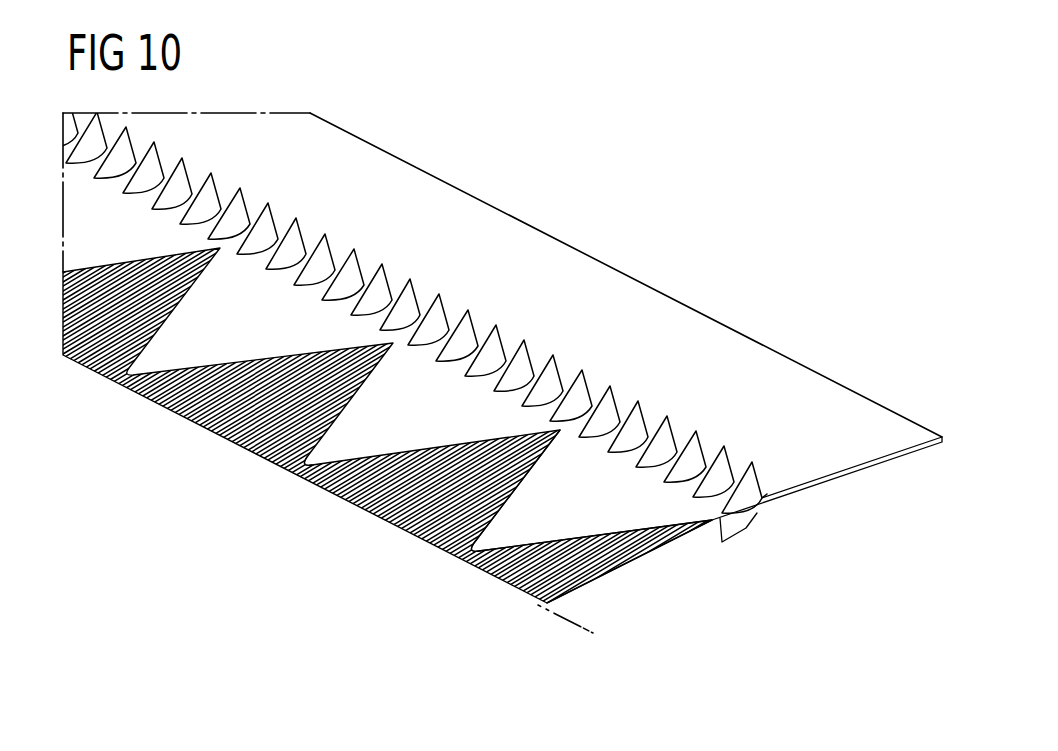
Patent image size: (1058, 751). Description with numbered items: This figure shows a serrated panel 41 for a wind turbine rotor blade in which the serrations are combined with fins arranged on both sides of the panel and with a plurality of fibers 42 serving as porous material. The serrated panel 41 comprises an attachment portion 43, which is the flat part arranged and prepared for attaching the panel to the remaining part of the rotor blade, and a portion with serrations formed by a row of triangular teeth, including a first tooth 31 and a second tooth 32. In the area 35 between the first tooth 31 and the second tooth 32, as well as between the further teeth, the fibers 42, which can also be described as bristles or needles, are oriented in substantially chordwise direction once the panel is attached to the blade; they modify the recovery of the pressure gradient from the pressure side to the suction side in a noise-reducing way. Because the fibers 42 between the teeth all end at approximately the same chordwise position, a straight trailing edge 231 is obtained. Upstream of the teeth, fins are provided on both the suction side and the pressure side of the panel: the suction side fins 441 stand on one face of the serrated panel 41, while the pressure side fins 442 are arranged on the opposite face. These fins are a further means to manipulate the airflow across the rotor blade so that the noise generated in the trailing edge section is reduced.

The serrated panel 41 is at (789, 277).
The attachment portion 43 is at (826, 412).
The suction side fins 441 is at (750, 482).
The pressure side fins 442 is at (733, 527).
The fibers 42 is at (410, 528).
The first tooth 31 is at (568, 513).
The second tooth 32 is at (332, 445).
The area between the first tooth and the second tooth 35 is at (340, 530).
The trailing edge 231 is at (573, 625).